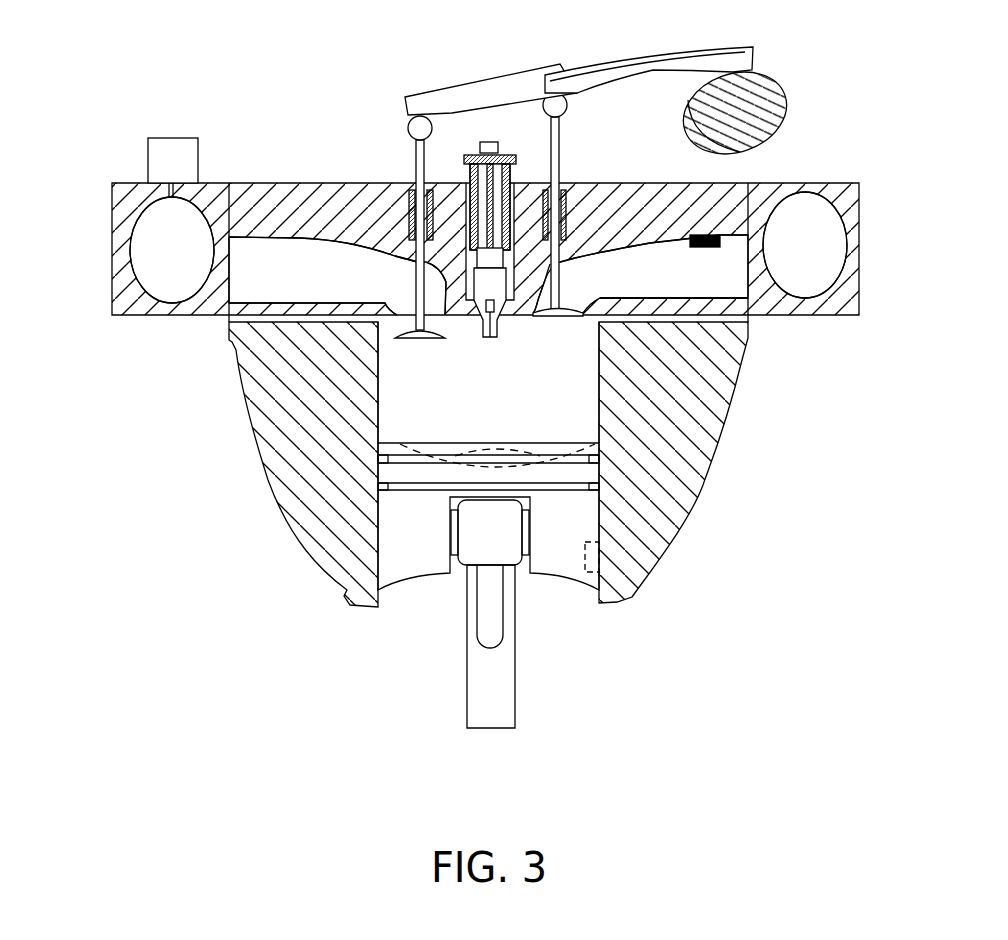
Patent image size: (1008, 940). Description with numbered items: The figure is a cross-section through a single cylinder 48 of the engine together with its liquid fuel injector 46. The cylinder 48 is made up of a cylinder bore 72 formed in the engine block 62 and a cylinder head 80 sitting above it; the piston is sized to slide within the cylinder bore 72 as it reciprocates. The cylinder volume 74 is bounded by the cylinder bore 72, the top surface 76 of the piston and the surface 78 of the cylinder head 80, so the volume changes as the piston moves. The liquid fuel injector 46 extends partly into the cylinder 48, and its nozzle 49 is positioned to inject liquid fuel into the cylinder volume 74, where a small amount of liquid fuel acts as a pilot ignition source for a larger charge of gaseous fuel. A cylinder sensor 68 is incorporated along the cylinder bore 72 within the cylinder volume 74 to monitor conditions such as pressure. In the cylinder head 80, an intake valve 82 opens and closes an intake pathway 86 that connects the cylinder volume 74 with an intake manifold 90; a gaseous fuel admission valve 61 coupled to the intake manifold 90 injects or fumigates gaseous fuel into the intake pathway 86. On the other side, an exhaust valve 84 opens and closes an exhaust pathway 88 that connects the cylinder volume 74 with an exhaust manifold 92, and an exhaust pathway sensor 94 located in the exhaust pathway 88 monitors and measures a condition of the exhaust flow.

The liquid fuel injector 46 is at (509, 141).
The cylinder 48 is at (272, 529).
The nozzle 49 is at (496, 338).
The gaseous fuel admission valve 61 is at (173, 140).
The engine block 62 is at (677, 468).
The cylinder sensor 68 is at (585, 557).
The cylinder bore 72 is at (597, 397).
The cylinder volume 74 is at (398, 388).
The top surface of the piston 76 is at (453, 443).
The surface of the cylinder head 78 is at (538, 318).
The cylinder head 80 is at (702, 196).
The intake valve 82 is at (408, 318).
The exhaust valve 84 is at (571, 312).
The intake pathway 86 is at (262, 257).
The exhaust pathway 88 is at (727, 282).
The intake manifold 90 is at (136, 256).
The exhaust manifold 92 is at (814, 225).
The exhaust pathway sensor 94 is at (703, 248).